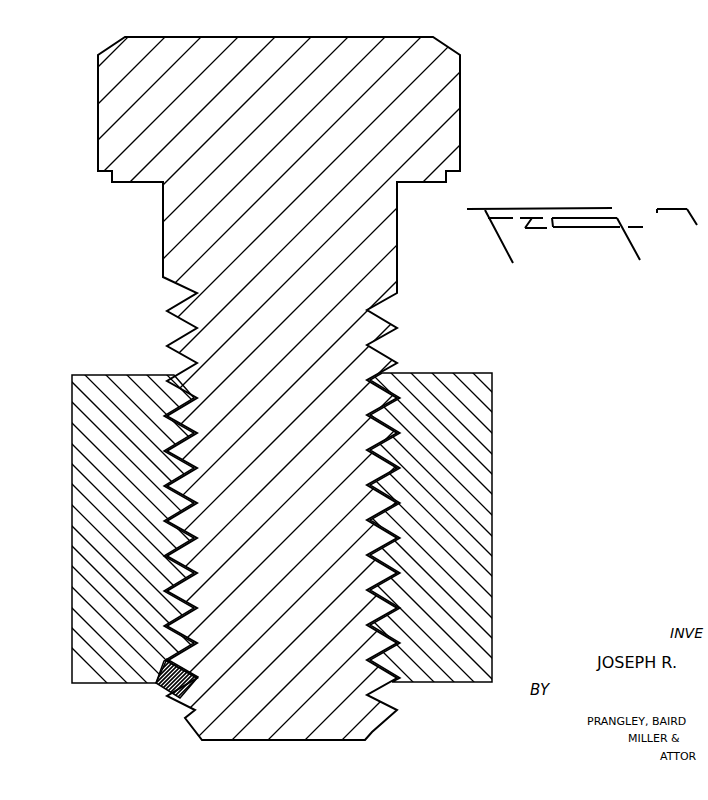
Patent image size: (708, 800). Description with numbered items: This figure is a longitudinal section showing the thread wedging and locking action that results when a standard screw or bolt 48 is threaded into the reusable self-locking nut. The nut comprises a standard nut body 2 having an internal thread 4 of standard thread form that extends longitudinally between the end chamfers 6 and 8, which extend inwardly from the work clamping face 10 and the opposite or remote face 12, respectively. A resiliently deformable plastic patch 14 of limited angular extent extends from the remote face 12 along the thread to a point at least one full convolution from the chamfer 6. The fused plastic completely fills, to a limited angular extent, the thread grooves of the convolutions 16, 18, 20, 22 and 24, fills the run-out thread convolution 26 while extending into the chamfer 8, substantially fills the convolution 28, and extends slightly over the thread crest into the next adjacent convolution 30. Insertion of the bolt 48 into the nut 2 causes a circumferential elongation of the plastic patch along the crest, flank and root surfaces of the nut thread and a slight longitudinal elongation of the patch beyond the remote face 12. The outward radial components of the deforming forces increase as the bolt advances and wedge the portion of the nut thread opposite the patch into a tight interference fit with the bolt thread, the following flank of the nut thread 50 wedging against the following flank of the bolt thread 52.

The nut body 2 is at (496, 393).
The internal thread 4 is at (405, 536).
The end chamfer 6 is at (393, 380).
The end chamfer 8 is at (398, 682).
The work clamping face 10 is at (455, 373).
The remote face 12 is at (465, 682).
The plastic patch 14 is at (180, 698).
The thread convolution 16 is at (165, 487).
The thread convolution 18 is at (178, 540).
The thread convolution 20 is at (178, 572).
The thread convolution 22 is at (160, 612).
The thread convolution 24 is at (85, 683).
The run-out thread convolution 26 is at (143, 683).
The thread convolution 28 is at (160, 458).
The thread convolution 30 is at (167, 428).
The screw or bolt 48 is at (163, 243).
The following flank of the nut thread 50 is at (387, 638).
The following flank of the bolt thread 52 is at (385, 640).